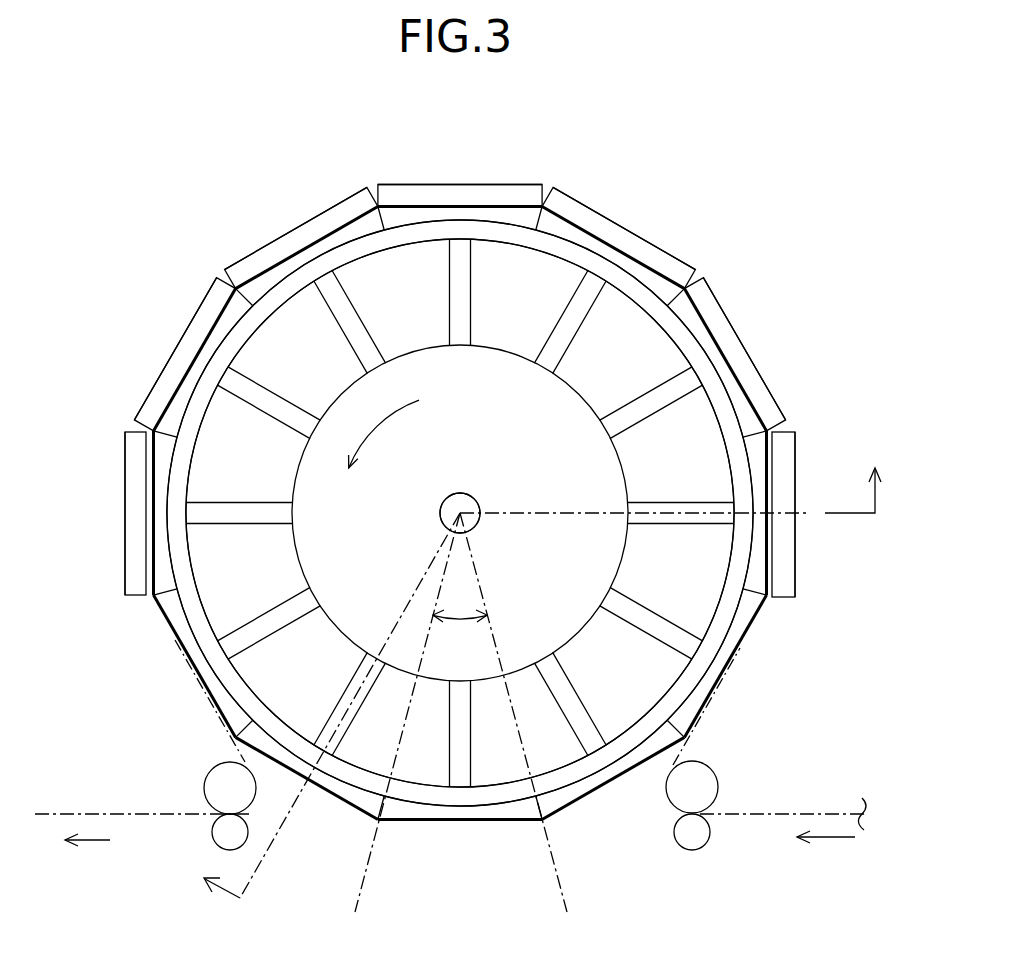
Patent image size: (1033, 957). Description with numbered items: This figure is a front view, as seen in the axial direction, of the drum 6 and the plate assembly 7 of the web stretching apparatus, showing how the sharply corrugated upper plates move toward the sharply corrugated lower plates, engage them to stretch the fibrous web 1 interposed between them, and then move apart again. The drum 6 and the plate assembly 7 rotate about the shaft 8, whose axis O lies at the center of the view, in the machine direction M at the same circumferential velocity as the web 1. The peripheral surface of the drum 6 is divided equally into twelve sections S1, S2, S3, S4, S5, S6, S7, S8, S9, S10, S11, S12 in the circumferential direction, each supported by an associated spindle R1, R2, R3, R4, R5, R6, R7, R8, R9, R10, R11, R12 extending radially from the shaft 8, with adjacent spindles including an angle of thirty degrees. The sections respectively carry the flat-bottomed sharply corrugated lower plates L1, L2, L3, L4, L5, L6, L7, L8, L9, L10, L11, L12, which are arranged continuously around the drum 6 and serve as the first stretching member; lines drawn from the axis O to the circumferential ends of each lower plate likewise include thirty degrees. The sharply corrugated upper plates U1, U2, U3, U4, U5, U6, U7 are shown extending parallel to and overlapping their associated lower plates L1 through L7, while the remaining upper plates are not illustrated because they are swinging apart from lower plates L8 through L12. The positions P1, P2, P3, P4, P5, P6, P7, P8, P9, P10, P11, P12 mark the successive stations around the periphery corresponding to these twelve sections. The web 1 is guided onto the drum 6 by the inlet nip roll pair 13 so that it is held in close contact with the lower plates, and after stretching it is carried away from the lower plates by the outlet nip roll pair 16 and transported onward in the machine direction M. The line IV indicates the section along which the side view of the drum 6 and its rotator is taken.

The fibrous web 1 is at (818, 812).
The drum 6 is at (432, 845).
The plate assembly 7 is at (797, 290).
The shaft 8 is at (447, 500).
The inlet nip roll pair 13 is at (712, 790).
The outlet nip roll pair 16 is at (215, 833).
The axis of the shaft O is at (470, 497).
The machine direction M is at (392, 412).
The line IV- IV is at (527, 664).
The plate P1 is at (815, 514).
The plate P2 is at (757, 354).
The plate P3 is at (618, 216).
The plate P4 is at (460, 141).
The plate P5 is at (299, 203).
The plate P6 is at (151, 354).
The plate P7 is at (90, 513).
The plate position P8 is at (175, 701).
The plate position P9 is at (290, 898).
The plate position P10 is at (467, 915).
The plate position P11 is at (665, 873).
The plate position P12 is at (752, 706).
The sharply corrugated lower plate L1 is at (770, 462).
The sharply corrugated lower plate L2 is at (700, 318).
The sharply corrugated lower plate L3 is at (650, 268).
The sharply corrugated lower plate L4 is at (402, 203).
The sharply corrugated lower plate L5 is at (268, 263).
The sharply corrugated lower plate L6 is at (215, 300).
The sharply corrugated lower plate L7 is at (150, 465).
The sharply corrugated lower plate L8 is at (165, 612).
The sharply corrugated lower plate L9 is at (327, 797).
The sharply corrugated lower plate L10 is at (492, 823).
The sharply corrugated lower plate L11 is at (580, 812).
The sharply corrugated lower plate L12 is at (695, 722).
The sharply corrugated upper plate U1 is at (795, 533).
The sharply corrugated upper plate U2 is at (772, 390).
The sharply corrugated upper plate U3 is at (598, 202).
The sharply corrugated upper plate U4 is at (466, 186).
The sharply corrugated upper plate U5 is at (285, 228).
The sharply corrugated upper plate U6 is at (180, 335).
The sharply corrugated upper plate U7 is at (128, 565).
The spindle R1 is at (667, 512).
The spindle R2 is at (640, 412).
The spindle R3 is at (555, 335).
The spindle R4 is at (455, 330).
The spindle R5 is at (343, 328).
The spindle R6 is at (278, 415).
The spindle R7 is at (282, 518).
The spindle R8 is at (275, 622).
The spindle R9 is at (367, 690).
The spindle R10 is at (463, 705).
The spindle R11 is at (575, 703).
The spindle R12 is at (635, 608).
The section S1 is at (753, 452).
The section S2 is at (675, 315).
The section S3 is at (575, 235).
The section S4 is at (498, 220).
The section S5 is at (268, 282).
The section S6 is at (180, 410).
The section S7 is at (180, 550).
The section S8 is at (235, 700).
The section S9 is at (360, 797).
The section S10 is at (507, 810).
The section S11 is at (640, 748).
The section S12 is at (727, 630).